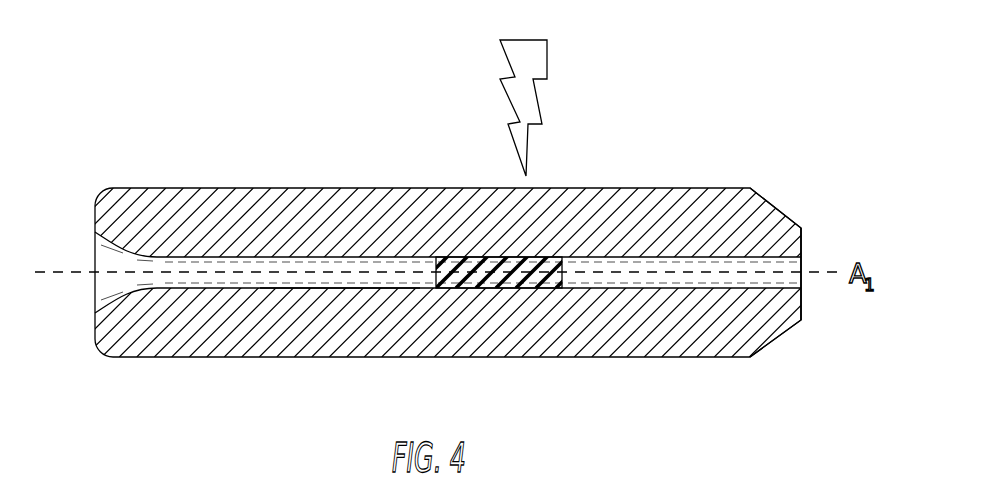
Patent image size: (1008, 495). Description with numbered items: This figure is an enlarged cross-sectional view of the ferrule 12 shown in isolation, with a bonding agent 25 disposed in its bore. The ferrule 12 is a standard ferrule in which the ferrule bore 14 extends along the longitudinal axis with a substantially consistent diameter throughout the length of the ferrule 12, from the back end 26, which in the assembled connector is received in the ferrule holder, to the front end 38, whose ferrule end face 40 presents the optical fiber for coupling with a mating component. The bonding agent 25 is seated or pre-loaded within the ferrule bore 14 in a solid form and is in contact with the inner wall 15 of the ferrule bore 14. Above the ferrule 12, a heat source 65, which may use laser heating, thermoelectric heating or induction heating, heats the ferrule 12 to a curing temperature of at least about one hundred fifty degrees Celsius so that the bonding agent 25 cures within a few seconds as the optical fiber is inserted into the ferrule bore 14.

The ferrule 12 is at (233, 358).
The ferrule bore 14 is at (141, 285).
The inner wall 15 is at (278, 296).
The bonding agent 25 is at (487, 290).
The back end 26 is at (103, 215).
The front end 38 is at (802, 230).
The ferrule end face 40 is at (861, 194).
The heat source 65 is at (539, 114).